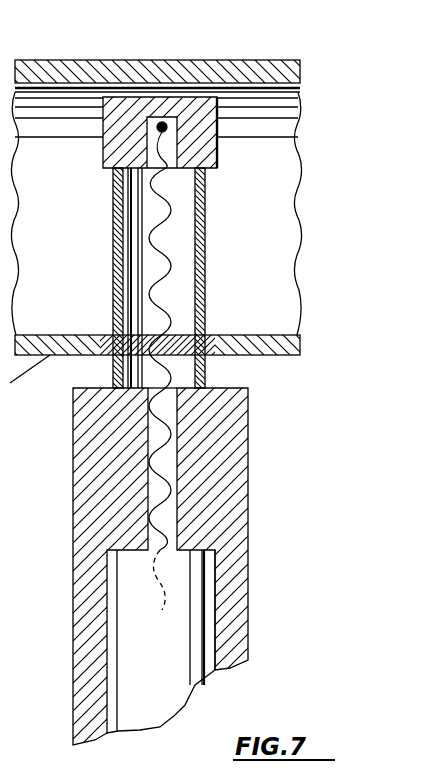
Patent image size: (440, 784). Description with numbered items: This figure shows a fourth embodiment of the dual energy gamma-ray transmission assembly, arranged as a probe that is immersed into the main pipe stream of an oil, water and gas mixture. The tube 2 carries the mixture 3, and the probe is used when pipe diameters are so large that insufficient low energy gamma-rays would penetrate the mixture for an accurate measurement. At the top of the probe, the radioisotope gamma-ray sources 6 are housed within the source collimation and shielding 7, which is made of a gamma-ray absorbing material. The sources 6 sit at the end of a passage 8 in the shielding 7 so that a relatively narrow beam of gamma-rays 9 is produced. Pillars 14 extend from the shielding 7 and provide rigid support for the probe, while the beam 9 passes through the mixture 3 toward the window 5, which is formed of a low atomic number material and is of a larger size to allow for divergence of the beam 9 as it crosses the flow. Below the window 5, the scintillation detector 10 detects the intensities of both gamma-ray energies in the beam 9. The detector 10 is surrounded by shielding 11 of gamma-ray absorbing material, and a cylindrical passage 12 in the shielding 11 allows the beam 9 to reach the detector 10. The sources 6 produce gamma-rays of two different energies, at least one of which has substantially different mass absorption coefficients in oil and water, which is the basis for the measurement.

The tube 2 is at (97, 73).
The mixture 3 is at (277, 205).
The window 5 is at (217, 358).
The radioisotope gamma-ray sources 6 is at (166, 124).
The shielding 7 is at (118, 143).
The passage 8 is at (176, 155).
The beam of gamma-rays 9 is at (173, 290).
The scintillation detector 10 is at (193, 622).
The shielding 11 is at (233, 453).
The cylindrical passage 12 is at (170, 497).
The pillars 14 is at (118, 247).